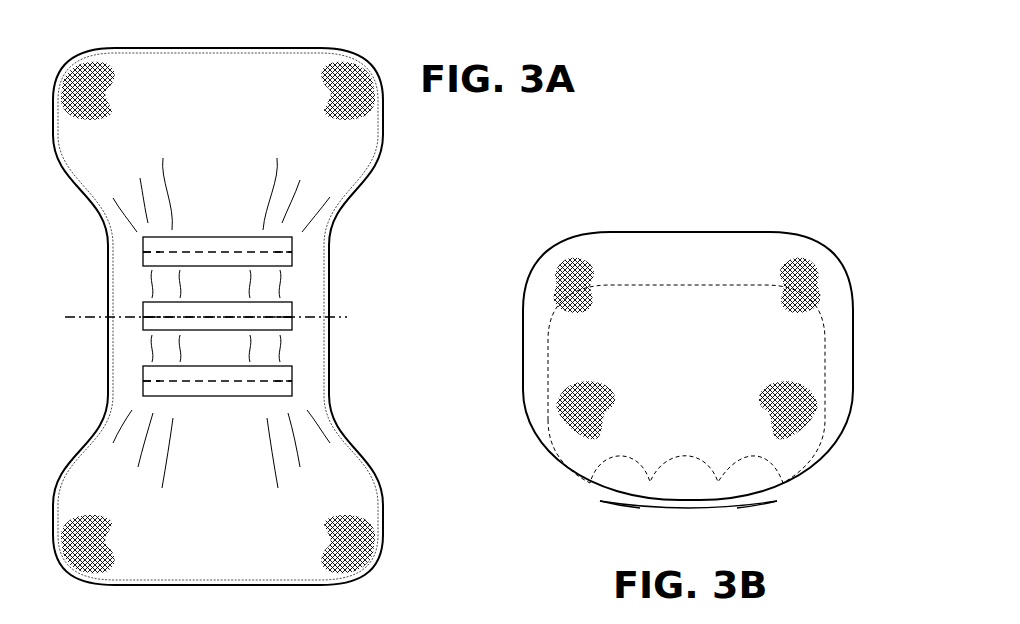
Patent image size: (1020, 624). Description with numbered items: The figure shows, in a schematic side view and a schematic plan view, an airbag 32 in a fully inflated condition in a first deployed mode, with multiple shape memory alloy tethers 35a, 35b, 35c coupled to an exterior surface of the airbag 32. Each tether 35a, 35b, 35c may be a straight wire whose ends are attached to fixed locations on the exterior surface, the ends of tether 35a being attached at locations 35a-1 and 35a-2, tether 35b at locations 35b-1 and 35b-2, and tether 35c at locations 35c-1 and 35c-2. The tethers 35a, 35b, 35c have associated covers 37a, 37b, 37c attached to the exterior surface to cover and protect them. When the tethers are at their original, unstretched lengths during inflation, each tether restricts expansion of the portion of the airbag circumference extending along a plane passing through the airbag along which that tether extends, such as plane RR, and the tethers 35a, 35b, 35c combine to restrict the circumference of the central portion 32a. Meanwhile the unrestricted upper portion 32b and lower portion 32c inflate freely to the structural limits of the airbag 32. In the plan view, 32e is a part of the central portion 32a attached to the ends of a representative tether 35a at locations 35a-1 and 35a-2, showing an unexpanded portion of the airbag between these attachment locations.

In FIG. 3A, the airbag 32 is at (68, 81).
In FIG. 3B, the airbag 32 is at (841, 292).
In FIG. 3A, the central portion 32a is at (375, 225).
In FIG. 3A, the upper portion 32b is at (237, 62).
In FIG. 3B, the upper portion 32b is at (593, 258).
In FIG. 3A, the lower portion 32c is at (138, 553).
In FIG. 3B, the part of the airbag central portion 32e is at (686, 457).
In FIG. 3A, the tether 35a is at (170, 250).
In FIG. 3B, the tether 35a is at (645, 508).
In FIG. 3A, the tether attachment location 35a-1 is at (143, 252).
In FIG. 3B, the tether attachment location 35a-1 is at (600, 502).
In FIG. 3A, the tether attachment location 35a-2 is at (292, 252).
In FIG. 3B, the tether attachment location 35a-2 is at (777, 502).
In FIG. 3A, the tether 35b is at (170, 317).
In FIG. 3A, the tether attachment location 35b-1 is at (143, 317).
In FIG. 3A, the tether attachment location 35b-2 is at (293, 317).
In FIG. 3A, the tether 35c is at (187, 382).
In FIG. 3A, the tether attachment location 35c-1 is at (143, 382).
In FIG. 3A, the tether attachment location 35c-2 is at (293, 381).
In FIG. 3A, the cover 37a is at (218, 238).
In FIG. 3A, the cover 37b is at (293, 308).
In FIG. 3A, the cover 37c is at (293, 396).
In FIG. 3A, the plane RR is at (75, 320).